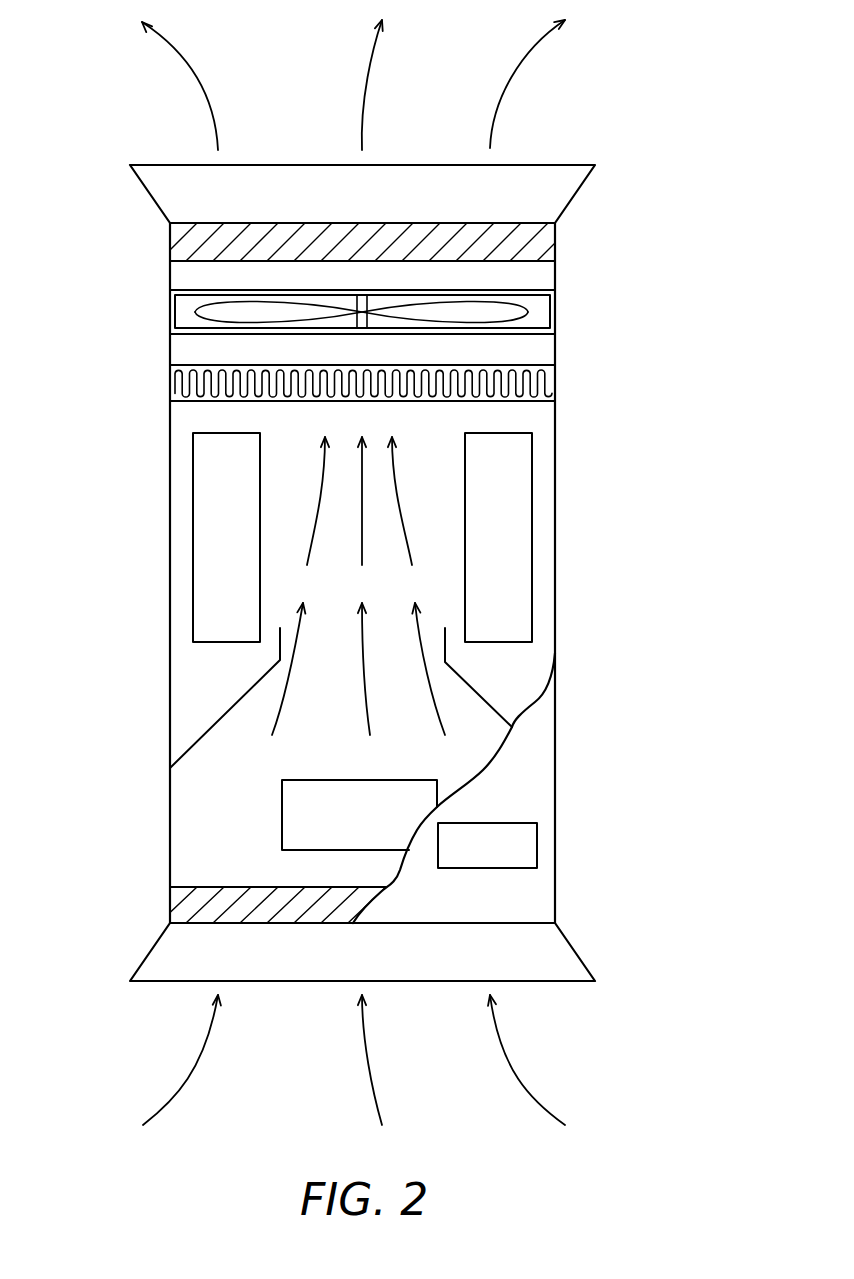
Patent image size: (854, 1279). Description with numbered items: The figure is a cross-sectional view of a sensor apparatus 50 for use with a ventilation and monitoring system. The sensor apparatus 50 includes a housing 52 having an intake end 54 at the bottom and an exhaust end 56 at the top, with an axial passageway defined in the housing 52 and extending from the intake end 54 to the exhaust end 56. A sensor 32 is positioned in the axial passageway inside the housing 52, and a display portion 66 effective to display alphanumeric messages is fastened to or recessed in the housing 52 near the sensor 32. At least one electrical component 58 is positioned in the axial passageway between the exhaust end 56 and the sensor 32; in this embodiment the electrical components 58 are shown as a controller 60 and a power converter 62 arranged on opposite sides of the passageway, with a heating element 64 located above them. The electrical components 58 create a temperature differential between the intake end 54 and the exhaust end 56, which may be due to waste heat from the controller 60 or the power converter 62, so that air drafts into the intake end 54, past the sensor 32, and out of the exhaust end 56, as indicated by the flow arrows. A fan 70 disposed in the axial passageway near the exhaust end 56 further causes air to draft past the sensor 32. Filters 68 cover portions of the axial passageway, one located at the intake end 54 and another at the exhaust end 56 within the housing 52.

The sensor apparatus 50 is at (672, 110).
The exhaust end 56 is at (182, 193).
The intake end 54 is at (557, 955).
The filter 68 is at (547, 245).
The fan 70 is at (520, 310).
The heating element 64 is at (545, 392).
The electrical component 58 is at (373, 503).
The power converter 62 is at (210, 533).
The controller 60 is at (517, 533).
The housing 52 is at (542, 765).
The sensor 32 is at (297, 803).
The display portion 66 is at (530, 847).